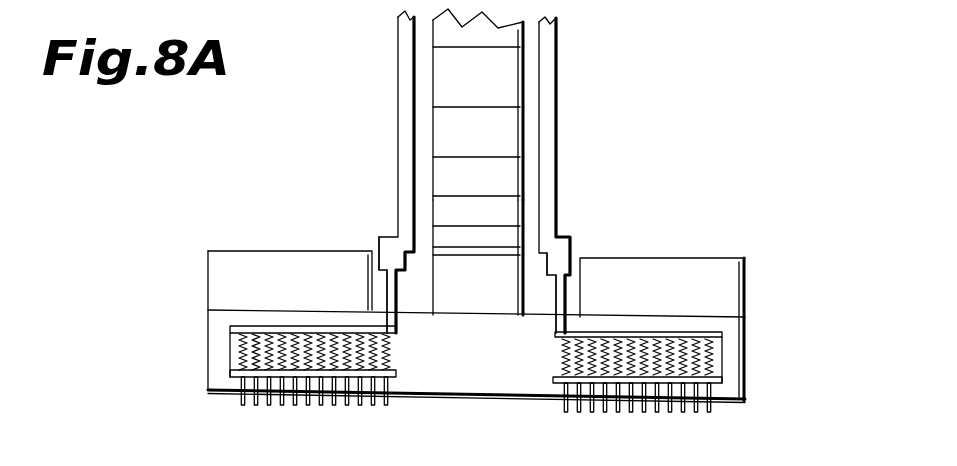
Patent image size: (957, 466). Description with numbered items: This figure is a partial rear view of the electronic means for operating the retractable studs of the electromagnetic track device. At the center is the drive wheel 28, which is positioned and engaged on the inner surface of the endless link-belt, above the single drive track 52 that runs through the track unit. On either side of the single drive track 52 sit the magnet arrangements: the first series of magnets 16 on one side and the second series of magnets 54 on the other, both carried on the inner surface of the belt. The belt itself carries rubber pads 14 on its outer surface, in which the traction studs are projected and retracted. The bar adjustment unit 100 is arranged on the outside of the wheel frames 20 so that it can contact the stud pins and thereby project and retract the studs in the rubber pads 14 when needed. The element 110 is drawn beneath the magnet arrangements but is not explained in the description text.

The base plate 14 is at (738, 338).
The left housing block 16 is at (268, 285).
The side wall arm 20 is at (408, 89).
The central connector body 28 is at (493, 147).
The lower central member 52 is at (473, 302).
The right housing block 54 is at (720, 288).
The wall locating pin 100 is at (393, 250).
The contact pins with springs 110 is at (246, 383).